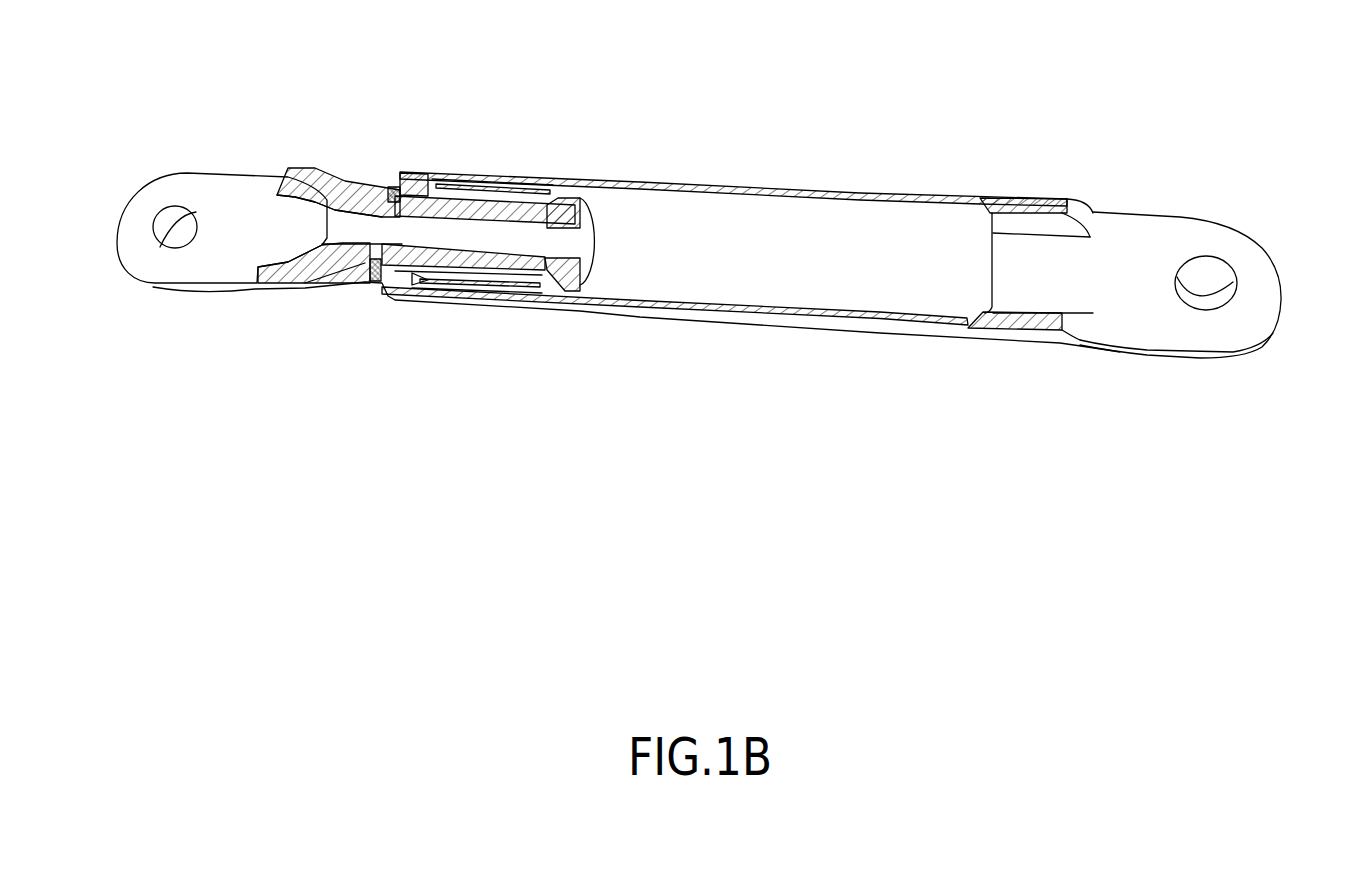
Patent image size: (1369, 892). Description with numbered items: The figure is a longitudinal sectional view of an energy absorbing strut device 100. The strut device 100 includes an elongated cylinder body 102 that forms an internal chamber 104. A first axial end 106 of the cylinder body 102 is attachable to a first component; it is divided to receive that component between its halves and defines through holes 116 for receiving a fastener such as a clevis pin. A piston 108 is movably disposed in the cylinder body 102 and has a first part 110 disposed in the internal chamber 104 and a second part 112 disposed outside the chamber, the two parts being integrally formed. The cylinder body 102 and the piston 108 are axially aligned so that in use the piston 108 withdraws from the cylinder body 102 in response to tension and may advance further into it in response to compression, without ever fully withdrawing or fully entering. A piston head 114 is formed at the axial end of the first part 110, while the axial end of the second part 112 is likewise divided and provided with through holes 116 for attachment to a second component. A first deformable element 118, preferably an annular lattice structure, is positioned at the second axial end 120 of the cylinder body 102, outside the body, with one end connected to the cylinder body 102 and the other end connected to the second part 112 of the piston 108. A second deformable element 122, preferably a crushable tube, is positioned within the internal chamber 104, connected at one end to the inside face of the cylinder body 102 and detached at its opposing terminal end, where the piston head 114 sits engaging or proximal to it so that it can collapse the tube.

The energy absorbing strut device 100 is at (853, 143).
The cylinder body 102 is at (928, 193).
The internal chamber 104 is at (697, 213).
The first axial end 106 is at (1202, 187).
The piston 108 is at (243, 173).
The first part 110 is at (490, 197).
The second part 112 is at (348, 172).
The piston head 114 is at (580, 197).
The through holes 116 is at (170, 225).
The first deformable element 118 is at (373, 285).
The second axial end 120 is at (335, 255).
The second deformable element 122 is at (510, 286).